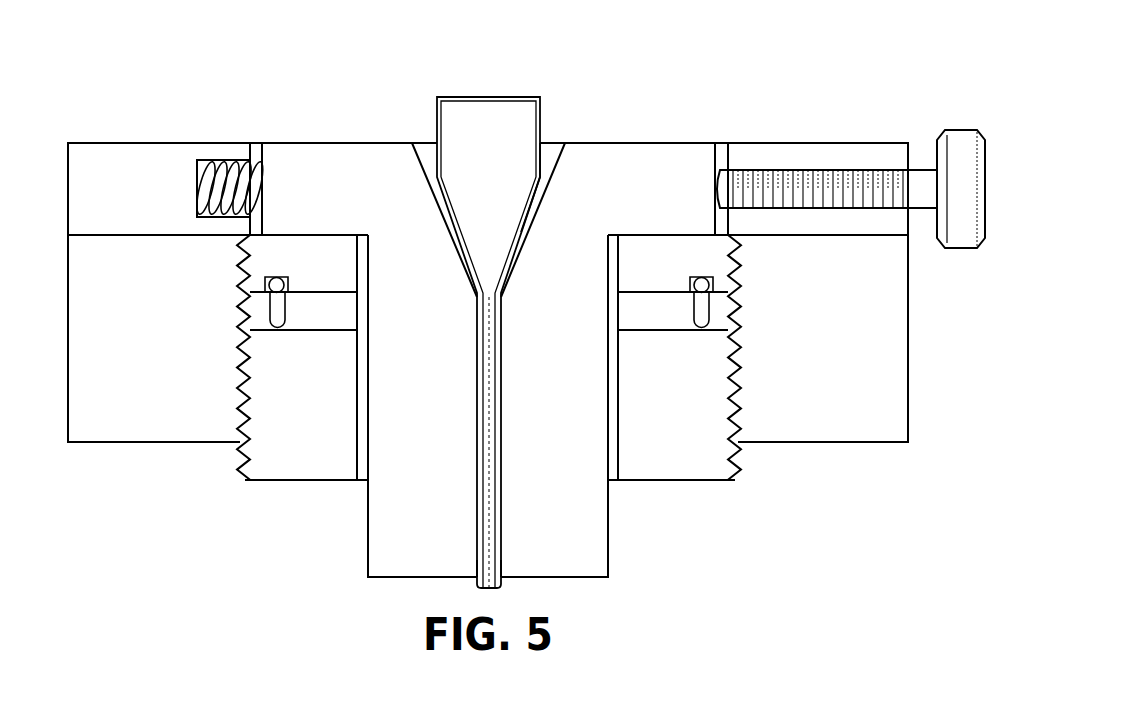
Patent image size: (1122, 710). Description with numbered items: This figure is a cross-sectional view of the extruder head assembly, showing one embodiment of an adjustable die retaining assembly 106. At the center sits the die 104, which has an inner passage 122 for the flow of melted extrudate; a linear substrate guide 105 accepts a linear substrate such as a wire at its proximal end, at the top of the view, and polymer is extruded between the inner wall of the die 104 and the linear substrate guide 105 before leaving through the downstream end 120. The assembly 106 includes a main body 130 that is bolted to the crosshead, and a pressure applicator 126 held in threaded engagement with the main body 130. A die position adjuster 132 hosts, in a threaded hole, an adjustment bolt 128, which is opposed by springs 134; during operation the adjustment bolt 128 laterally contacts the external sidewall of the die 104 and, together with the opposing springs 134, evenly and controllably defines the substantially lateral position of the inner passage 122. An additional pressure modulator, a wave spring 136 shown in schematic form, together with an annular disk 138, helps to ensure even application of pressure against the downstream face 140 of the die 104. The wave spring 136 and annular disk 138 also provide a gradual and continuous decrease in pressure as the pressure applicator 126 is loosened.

The die 104 is at (608, 543).
The linear substrate guide 105 is at (436, 118).
The die retaining assembly 106 is at (326, 80).
The downstream end 120 is at (577, 577).
The inner passage 122 is at (551, 163).
The pressure applicator 126 is at (702, 480).
The adjustment bolt 128 is at (962, 130).
The main body 130 is at (908, 338).
The die position adjuster 132 is at (826, 143).
The spring 134 is at (215, 160).
The wave spring 136 is at (288, 311).
The annular disk 138 is at (620, 292).
The downstream face 140 is at (333, 237).